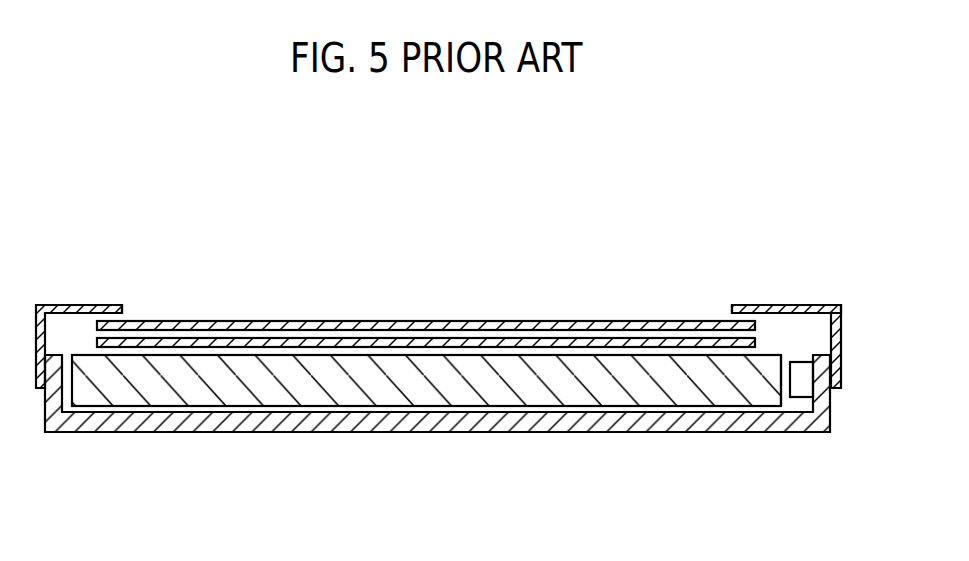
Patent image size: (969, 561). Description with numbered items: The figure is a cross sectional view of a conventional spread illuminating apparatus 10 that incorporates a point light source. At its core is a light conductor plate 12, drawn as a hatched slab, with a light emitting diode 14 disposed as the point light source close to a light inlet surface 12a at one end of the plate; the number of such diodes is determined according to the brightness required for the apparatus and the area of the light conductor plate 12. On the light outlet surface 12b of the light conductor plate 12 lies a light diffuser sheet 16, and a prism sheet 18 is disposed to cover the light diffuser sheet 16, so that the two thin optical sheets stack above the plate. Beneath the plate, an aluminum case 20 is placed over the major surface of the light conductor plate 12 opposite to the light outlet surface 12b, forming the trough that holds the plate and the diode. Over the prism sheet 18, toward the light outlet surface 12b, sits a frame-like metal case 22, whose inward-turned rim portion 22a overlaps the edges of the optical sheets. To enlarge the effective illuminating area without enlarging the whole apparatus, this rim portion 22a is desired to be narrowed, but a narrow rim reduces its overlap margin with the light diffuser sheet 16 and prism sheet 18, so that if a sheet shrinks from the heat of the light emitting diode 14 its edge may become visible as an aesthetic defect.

The spread illuminating apparatus 10 is at (595, 245).
The light conductor plate 12 is at (352, 370).
The light inlet surface 12a is at (792, 338).
The light outlet surface 12b is at (247, 354).
The light emitting diode 14 is at (802, 390).
The light diffuser sheet 16 is at (437, 342).
The prism sheet 18 is at (189, 322).
The aluminum case 20 is at (420, 414).
The frame-like metal case 22 is at (841, 338).
The rim portion 22a is at (85, 303).